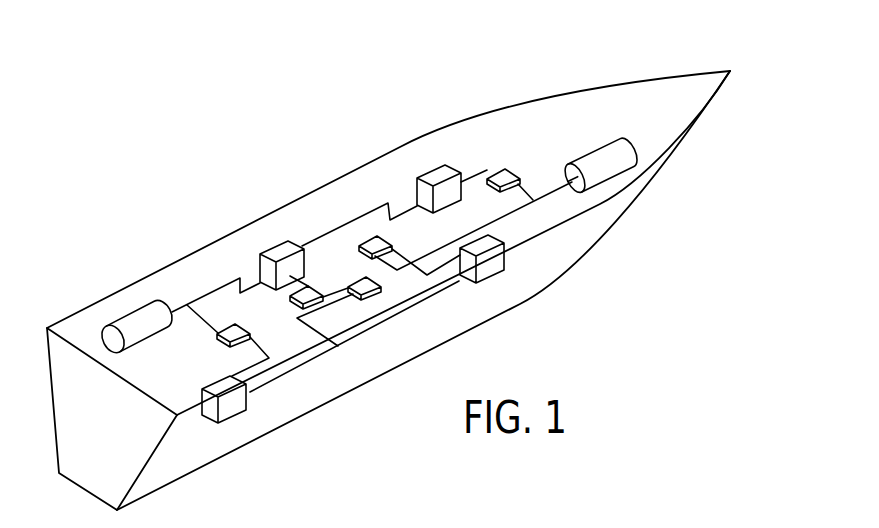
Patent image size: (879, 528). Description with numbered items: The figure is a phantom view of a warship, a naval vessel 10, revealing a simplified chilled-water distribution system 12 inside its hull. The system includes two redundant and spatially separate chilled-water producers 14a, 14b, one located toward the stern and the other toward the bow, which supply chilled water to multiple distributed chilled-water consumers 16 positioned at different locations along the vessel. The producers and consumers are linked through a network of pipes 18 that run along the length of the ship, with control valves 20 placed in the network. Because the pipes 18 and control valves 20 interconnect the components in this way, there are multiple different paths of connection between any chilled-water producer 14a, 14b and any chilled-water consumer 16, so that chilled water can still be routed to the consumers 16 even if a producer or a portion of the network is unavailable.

The naval vessel 10 is at (733, 46).
The chilled-water distribution system 12 is at (403, 115).
The chilled-water producer 14a is at (130, 313).
The chilled-water producer 14b is at (595, 157).
The chilled-water consumer 16 is at (281, 247).
The pipes 18 is at (205, 316).
The control valves 20 is at (307, 285).